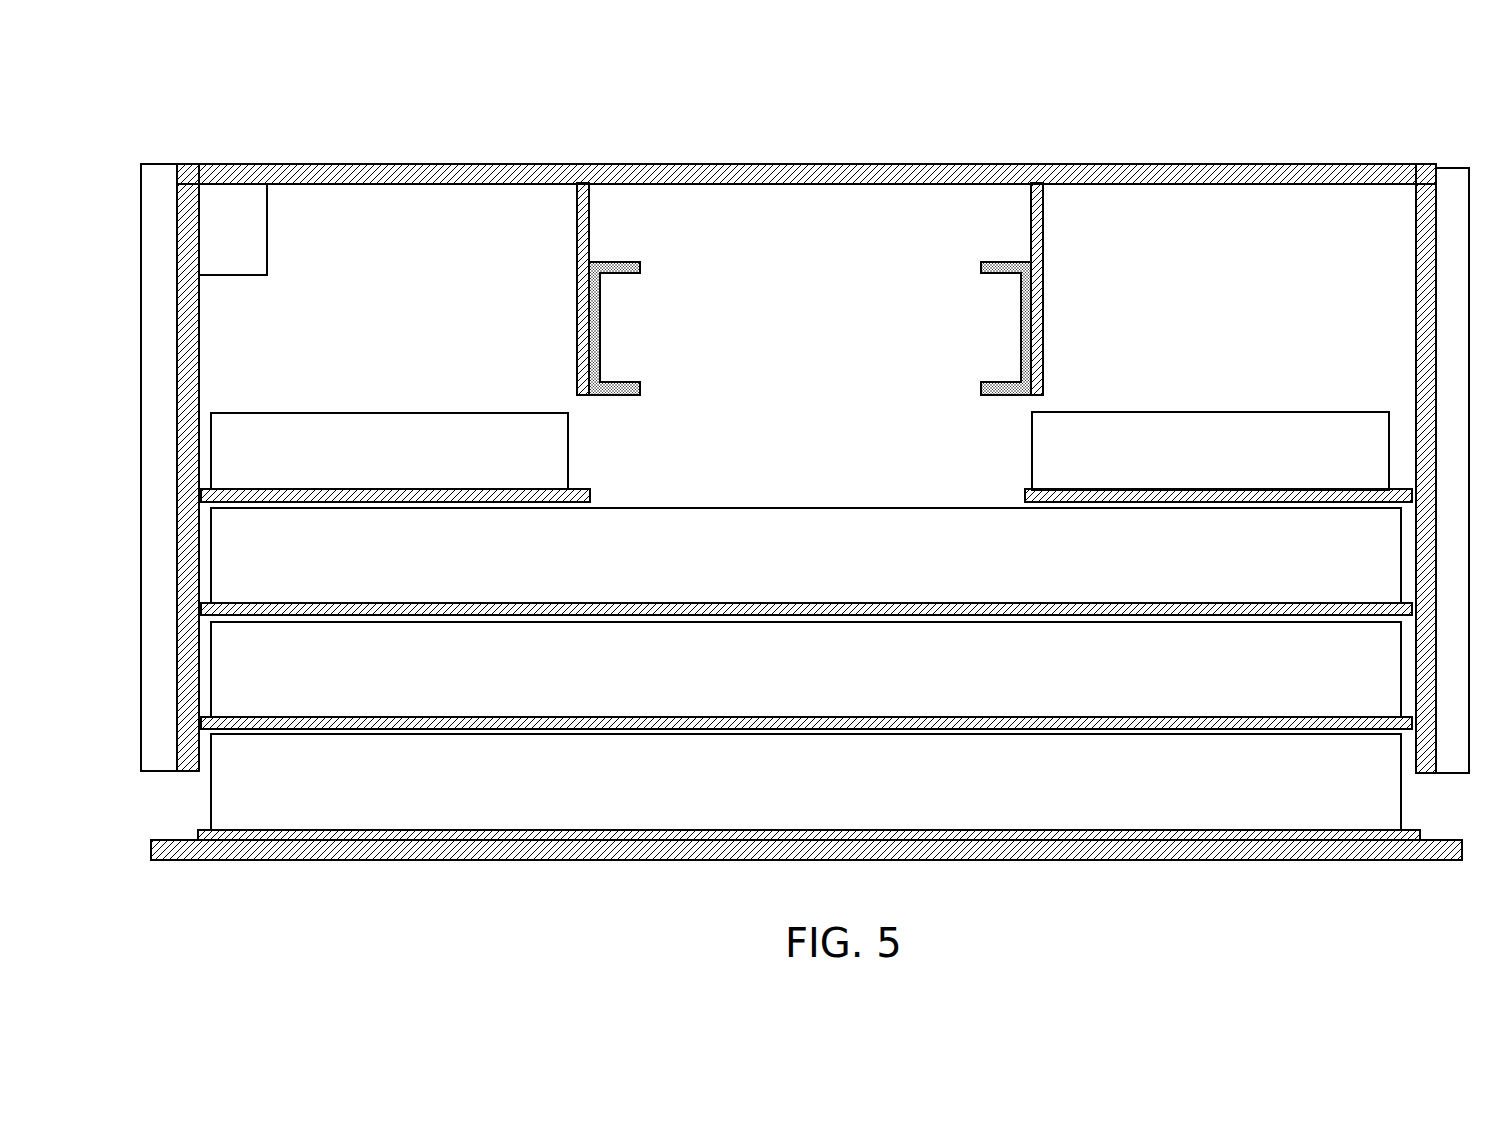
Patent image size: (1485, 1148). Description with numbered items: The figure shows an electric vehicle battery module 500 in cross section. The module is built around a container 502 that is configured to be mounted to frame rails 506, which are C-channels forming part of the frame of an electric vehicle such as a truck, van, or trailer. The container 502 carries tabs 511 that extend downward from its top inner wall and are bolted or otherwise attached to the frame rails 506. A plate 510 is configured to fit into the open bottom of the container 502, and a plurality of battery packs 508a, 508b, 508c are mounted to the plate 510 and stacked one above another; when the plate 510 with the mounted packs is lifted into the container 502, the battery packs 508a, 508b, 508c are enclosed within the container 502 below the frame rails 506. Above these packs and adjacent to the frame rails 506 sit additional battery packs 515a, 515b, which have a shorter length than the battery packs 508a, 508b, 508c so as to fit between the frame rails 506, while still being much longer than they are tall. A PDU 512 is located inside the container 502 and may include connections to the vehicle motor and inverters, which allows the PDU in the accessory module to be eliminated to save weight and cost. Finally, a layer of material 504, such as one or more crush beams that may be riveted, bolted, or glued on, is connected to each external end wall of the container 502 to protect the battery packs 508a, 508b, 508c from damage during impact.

The electric vehicle battery module 500 is at (167, 75).
The container 502 is at (413, 163).
The layer of material 504 is at (161, 170).
The frame rails 506 is at (617, 262).
The battery pack 508a is at (845, 568).
The battery pack 508b is at (845, 681).
The battery pack 508c is at (845, 796).
The plate 510 is at (178, 860).
The tabs 511 is at (577, 297).
The PDU 512 is at (256, 236).
The additional battery pack 515a is at (412, 464).
The additional battery pack 515b is at (1240, 464).